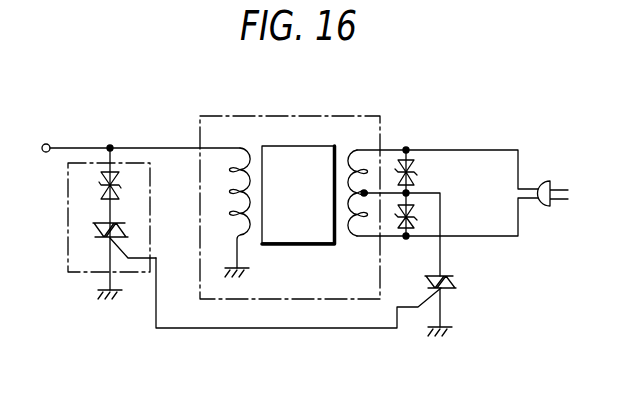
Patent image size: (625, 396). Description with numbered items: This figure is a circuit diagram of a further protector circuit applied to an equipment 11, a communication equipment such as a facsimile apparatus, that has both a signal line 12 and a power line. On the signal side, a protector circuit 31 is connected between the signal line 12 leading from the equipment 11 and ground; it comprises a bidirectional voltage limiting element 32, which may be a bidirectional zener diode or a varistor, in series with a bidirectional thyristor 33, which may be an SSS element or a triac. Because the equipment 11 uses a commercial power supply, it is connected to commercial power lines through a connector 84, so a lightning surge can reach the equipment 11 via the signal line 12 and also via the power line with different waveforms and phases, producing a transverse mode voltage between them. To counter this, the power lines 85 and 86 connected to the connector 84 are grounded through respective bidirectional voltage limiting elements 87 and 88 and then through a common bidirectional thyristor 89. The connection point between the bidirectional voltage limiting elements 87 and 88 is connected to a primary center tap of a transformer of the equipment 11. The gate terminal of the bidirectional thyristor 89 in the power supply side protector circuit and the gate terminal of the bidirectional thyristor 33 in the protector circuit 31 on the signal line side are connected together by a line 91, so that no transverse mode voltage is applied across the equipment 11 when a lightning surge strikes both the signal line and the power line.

The equipment 11 is at (343, 115).
The signal line 12 is at (81, 148).
The protector circuit 31 is at (91, 223).
The bidirectional voltage limiting element 32 is at (100, 186).
The bidirectional thyristor 33 is at (93, 229).
The connector 84 is at (539, 181).
The power line 85 is at (470, 150).
The power line 86 is at (482, 237).
The bidirectional voltage limiting element 87 is at (416, 173).
The bidirectional voltage limiting element 88 is at (399, 230).
The bidirectional thyristor 89 is at (454, 287).
The line 91 is at (311, 329).